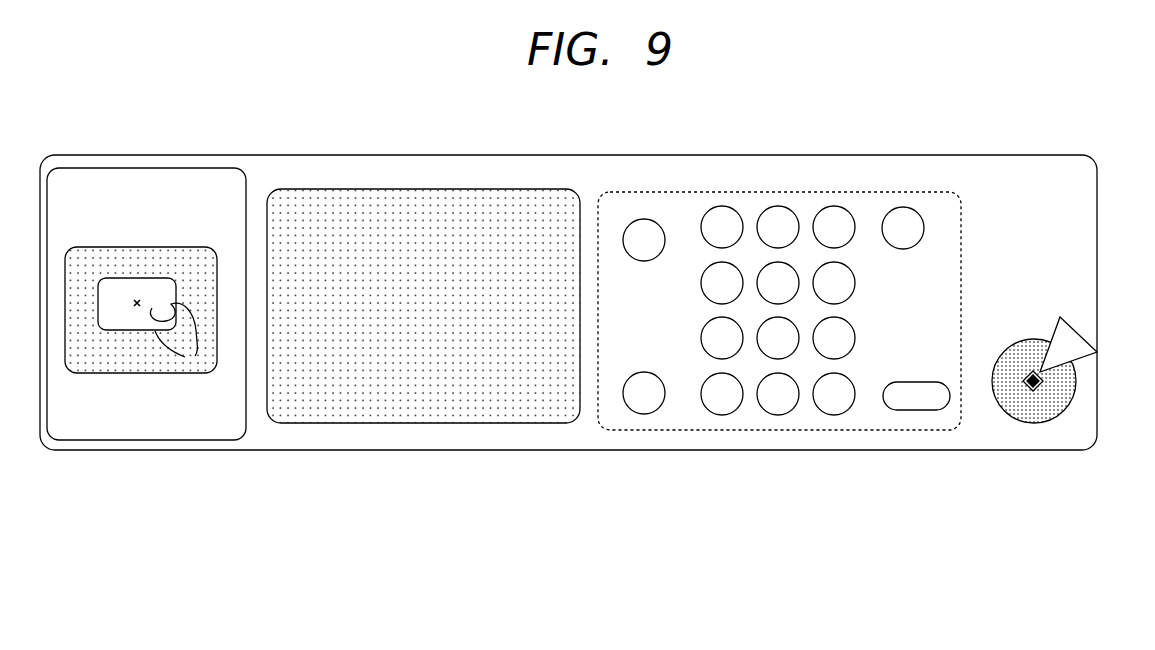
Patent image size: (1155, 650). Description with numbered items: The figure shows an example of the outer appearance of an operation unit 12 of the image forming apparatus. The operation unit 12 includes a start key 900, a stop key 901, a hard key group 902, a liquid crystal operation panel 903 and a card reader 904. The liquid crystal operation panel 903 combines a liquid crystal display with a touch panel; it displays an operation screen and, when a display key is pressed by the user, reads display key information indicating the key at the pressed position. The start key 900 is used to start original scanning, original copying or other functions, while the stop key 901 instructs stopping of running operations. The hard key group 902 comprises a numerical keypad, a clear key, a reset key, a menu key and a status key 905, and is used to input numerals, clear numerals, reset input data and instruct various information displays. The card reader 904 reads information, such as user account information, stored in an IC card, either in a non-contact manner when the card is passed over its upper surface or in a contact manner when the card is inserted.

The operation unit 12 is at (900, 155).
The start key 900 is at (1033, 423).
The stop key 901 is at (1077, 333).
The hard key group 902 is at (771, 192).
The liquid crystal operation panel 903 is at (411, 189).
The card reader 904 is at (144, 168).
The status key 905 is at (644, 414).